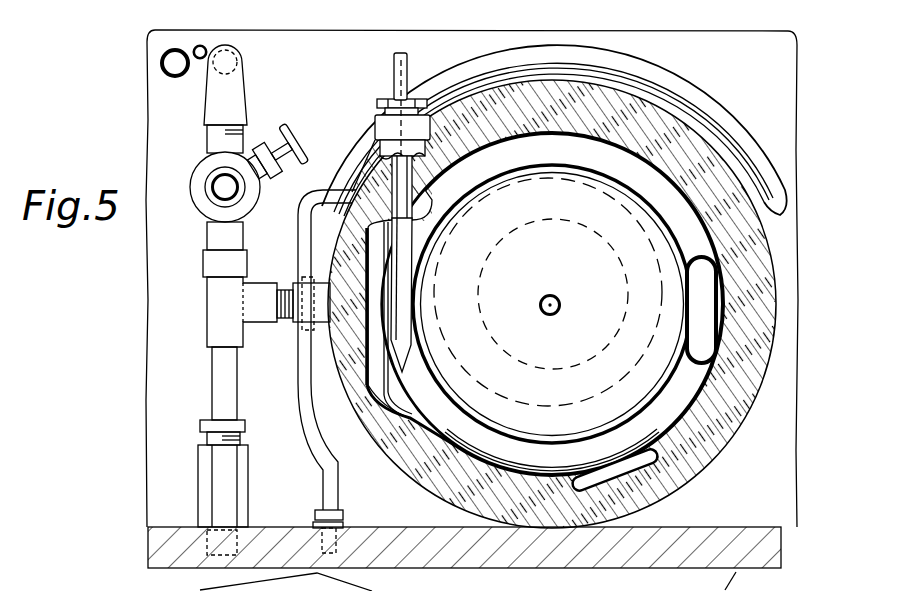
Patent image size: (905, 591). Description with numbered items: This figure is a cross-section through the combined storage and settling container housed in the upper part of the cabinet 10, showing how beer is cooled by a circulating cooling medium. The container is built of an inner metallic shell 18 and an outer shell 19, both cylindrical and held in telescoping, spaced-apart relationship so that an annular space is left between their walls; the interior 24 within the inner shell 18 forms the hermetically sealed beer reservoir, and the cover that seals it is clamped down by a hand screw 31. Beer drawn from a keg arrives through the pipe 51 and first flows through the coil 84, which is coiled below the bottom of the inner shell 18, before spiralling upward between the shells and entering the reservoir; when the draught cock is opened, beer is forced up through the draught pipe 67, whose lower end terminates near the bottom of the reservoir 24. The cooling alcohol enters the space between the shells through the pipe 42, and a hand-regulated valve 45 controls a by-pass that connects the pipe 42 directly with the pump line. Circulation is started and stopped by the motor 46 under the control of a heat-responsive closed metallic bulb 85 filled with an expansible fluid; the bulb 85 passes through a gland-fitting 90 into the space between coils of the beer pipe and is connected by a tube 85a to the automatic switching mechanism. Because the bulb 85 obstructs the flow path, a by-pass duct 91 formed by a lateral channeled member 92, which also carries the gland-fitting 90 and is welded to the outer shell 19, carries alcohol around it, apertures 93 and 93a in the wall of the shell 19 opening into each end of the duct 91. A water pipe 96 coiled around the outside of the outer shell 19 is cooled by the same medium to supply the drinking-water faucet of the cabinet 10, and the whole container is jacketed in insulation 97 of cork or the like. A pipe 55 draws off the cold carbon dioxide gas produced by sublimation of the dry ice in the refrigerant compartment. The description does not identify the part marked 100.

The cabinet 10 is at (118, 589).
The inner metallic shell 18 is at (597, 177).
The outer shell 19 is at (579, 165).
The interior 24 is at (533, 263).
The hand screw 31 is at (161, 65).
The pipe 42 is at (288, 80).
The hand-regulated valve 45 is at (259, 145).
The motor 46 is at (686, 356).
The pipe 51 is at (758, 160).
The pipe 55 is at (204, 46).
The draught pipe 67 is at (553, 293).
The coil 84 is at (598, 417).
The closed metallic bulb 85 is at (400, 290).
The tube 85a is at (396, 68).
The gland-fitting 90 is at (378, 124).
The by-pass duct 91 is at (392, 368).
The lateral channeled member 92 is at (412, 405).
The aperture 93 is at (438, 418).
The aperture 93a is at (410, 210).
The pipe 96 is at (320, 450).
The insulation 97 is at (705, 450).
The supply pipe 100 is at (246, 500).